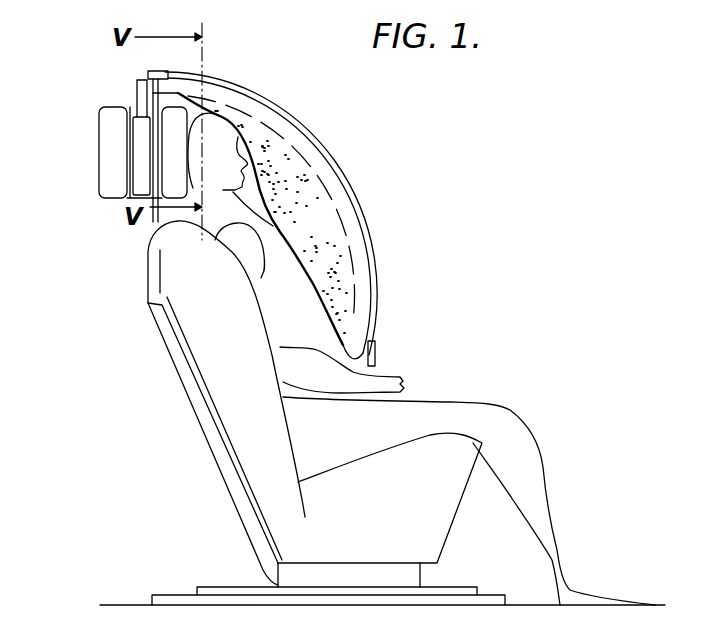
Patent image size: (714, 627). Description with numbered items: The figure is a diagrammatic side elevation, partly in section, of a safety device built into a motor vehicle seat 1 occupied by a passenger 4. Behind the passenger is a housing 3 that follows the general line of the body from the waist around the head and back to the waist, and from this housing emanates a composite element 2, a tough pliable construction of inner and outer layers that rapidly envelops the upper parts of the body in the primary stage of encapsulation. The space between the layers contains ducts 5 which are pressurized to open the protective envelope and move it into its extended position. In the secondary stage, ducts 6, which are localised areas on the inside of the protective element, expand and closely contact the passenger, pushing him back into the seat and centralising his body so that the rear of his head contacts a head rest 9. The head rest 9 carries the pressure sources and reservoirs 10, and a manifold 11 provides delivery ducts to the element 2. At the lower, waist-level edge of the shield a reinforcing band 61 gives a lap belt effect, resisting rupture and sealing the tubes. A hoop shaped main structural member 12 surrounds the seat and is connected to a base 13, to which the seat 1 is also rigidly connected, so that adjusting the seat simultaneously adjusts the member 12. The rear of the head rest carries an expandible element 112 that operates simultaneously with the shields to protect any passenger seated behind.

The seat 1 is at (228, 365).
The composite element 2 is at (218, 92).
The housing 3 is at (156, 72).
The passenger 4 is at (445, 415).
The ducts 5 is at (290, 132).
The ducts 6 is at (328, 253).
The reinforcing band 61 is at (375, 355).
The head rest 9 is at (135, 106).
The pressure sources and reservoirs 10 is at (118, 199).
The manifold 11 is at (141, 79).
The main structural member 12 is at (225, 472).
The base 13 is at (276, 582).
The expandible element 112 is at (103, 113).